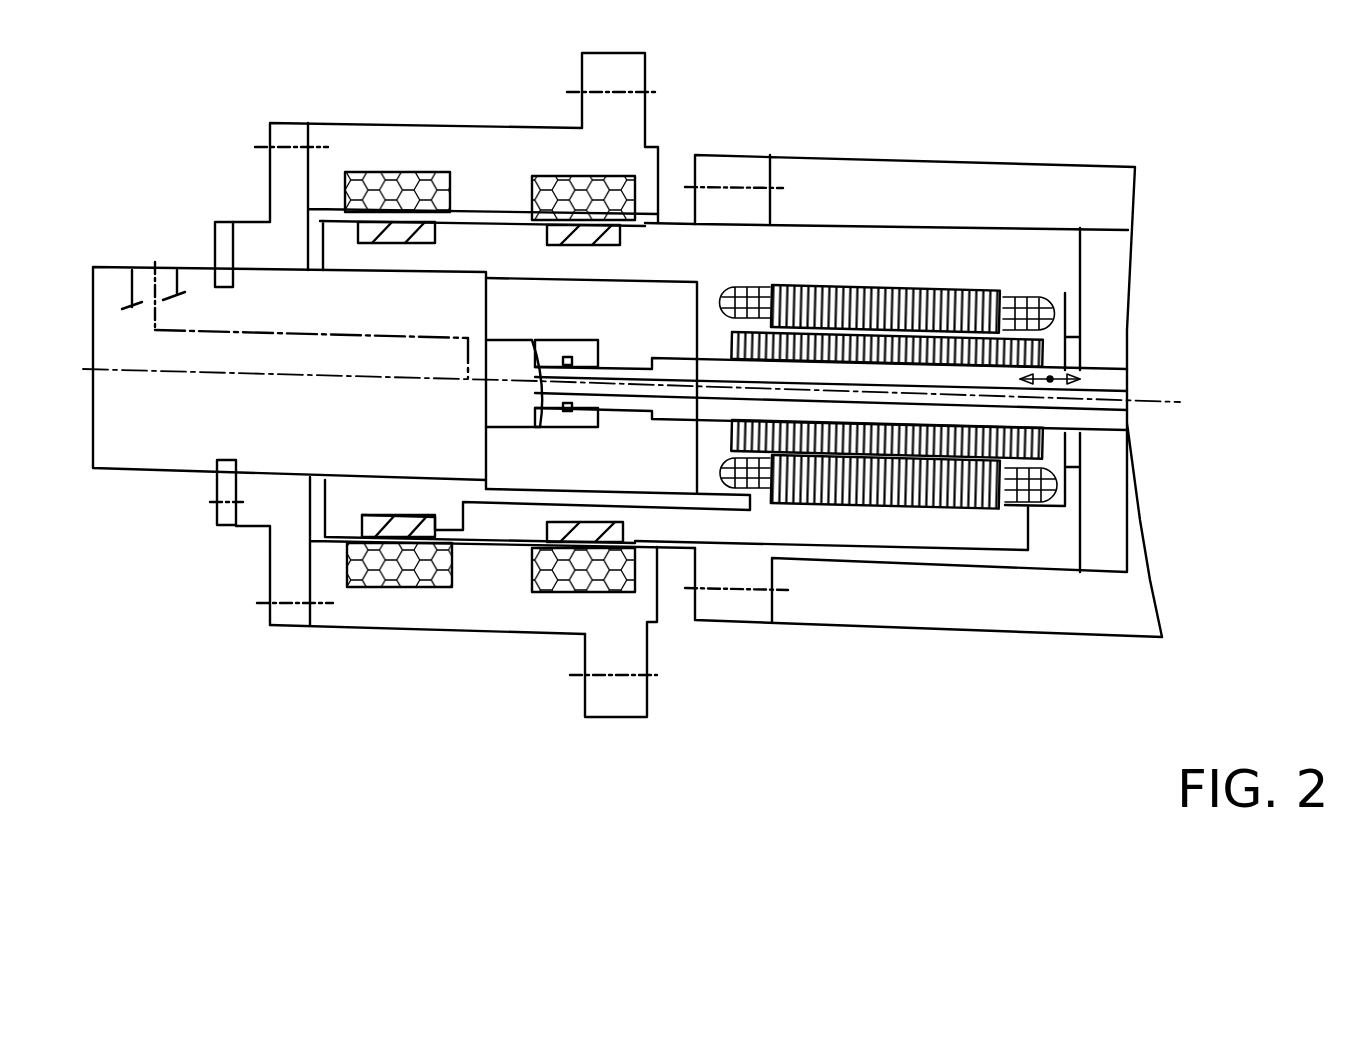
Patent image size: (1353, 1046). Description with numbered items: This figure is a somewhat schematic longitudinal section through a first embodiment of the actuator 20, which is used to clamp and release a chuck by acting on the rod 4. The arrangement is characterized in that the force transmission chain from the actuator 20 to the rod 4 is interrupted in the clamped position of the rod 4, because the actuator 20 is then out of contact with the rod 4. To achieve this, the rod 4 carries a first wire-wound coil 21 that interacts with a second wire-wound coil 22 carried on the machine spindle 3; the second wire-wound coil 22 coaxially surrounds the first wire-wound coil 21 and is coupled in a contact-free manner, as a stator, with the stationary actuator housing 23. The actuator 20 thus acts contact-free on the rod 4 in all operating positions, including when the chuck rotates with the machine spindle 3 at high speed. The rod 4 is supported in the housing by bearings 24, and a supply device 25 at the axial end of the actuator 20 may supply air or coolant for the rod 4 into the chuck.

The machine spindle 3 is at (898, 504).
The rod 4 is at (657, 441).
The actuator 20 is at (427, 748).
The first wire-wound coil 21 is at (895, 365).
The second wire-wound coil 22 is at (988, 456).
The actuator housing 23 is at (452, 434).
The bearing 24 is at (490, 500).
The supply device 25 is at (420, 436).